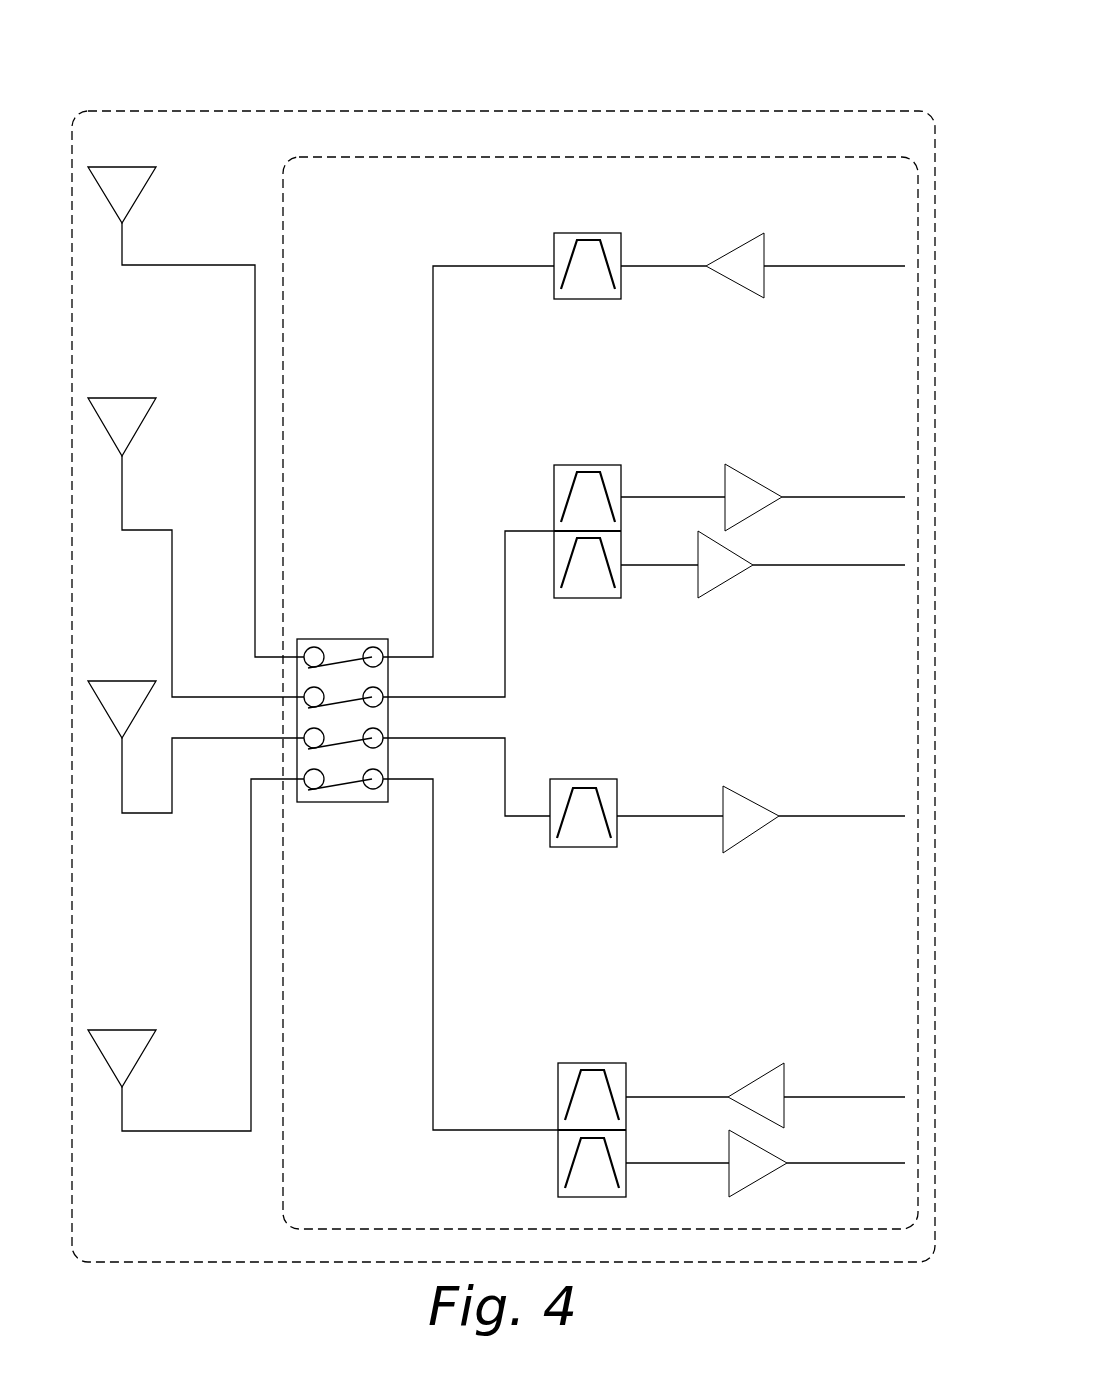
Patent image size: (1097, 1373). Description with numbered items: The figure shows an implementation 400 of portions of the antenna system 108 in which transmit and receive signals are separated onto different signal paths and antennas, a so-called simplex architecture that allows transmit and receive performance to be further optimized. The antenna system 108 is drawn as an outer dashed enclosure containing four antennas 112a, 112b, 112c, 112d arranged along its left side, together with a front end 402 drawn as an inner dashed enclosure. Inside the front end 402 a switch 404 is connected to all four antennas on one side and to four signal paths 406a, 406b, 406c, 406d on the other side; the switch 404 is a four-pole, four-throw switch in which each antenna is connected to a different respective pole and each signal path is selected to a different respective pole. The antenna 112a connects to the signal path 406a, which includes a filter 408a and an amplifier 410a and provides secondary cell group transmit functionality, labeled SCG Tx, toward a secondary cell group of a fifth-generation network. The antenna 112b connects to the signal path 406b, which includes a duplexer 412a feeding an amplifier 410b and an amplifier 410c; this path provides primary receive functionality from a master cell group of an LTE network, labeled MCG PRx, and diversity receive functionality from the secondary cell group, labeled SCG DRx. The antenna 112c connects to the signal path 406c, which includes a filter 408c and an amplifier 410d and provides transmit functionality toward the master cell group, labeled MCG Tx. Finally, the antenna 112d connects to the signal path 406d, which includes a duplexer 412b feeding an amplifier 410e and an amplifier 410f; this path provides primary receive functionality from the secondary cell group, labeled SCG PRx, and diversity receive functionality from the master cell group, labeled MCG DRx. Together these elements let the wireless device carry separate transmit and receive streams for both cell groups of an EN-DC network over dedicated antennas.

The implementation 400 is at (786, 72).
The antenna system 108 is at (283, 117).
The front end 402 is at (605, 156).
The antenna 112a is at (178, 138).
The antenna 112b is at (168, 360).
The antenna 112c is at (166, 645).
The antenna 112d is at (168, 993).
The switch 404 is at (342, 640).
The signal path 406a is at (443, 265).
The signal path 406b is at (522, 530).
The signal path 406c is at (507, 768).
The signal path 406d is at (430, 992).
The filter 408a is at (557, 235).
The filter 408c is at (661, 746).
The duplexer 412a is at (560, 466).
The duplexer 412b is at (562, 1068).
The amplifier 410a is at (743, 267).
The amplifier 410b is at (740, 482).
The amplifier 410c is at (716, 580).
The amplifier 410d is at (785, 760).
The amplifier 410e is at (777, 1075).
The amplifier 410f is at (773, 1157).